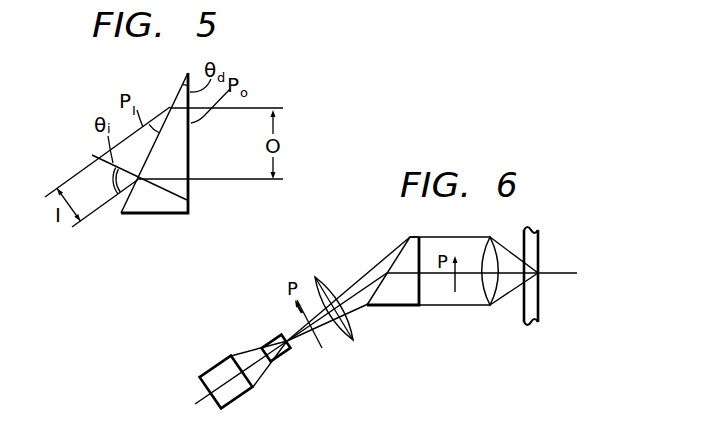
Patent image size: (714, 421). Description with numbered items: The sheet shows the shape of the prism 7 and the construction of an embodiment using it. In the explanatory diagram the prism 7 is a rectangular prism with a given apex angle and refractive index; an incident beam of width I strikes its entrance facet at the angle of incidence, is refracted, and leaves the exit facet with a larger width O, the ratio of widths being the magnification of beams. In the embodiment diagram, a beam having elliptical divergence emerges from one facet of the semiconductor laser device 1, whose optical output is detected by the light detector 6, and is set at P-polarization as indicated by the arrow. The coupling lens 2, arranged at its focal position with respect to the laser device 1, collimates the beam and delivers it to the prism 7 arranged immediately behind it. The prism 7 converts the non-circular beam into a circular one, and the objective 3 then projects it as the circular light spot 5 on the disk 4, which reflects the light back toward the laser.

In FIG. 6, the semiconductor laser device 1 is at (279, 339).
In FIG. 6, the coupling lens 2 is at (348, 329).
In FIG. 6, the objective 3 is at (492, 296).
In FIG. 6, the disk 4 is at (535, 243).
In FIG. 6, the light spot 5 is at (540, 276).
In FIG. 6, the light detector 6 is at (219, 368).
In FIG. 5, the prism 7 is at (157, 214).
In FIG. 6, the prism 7 is at (408, 257).